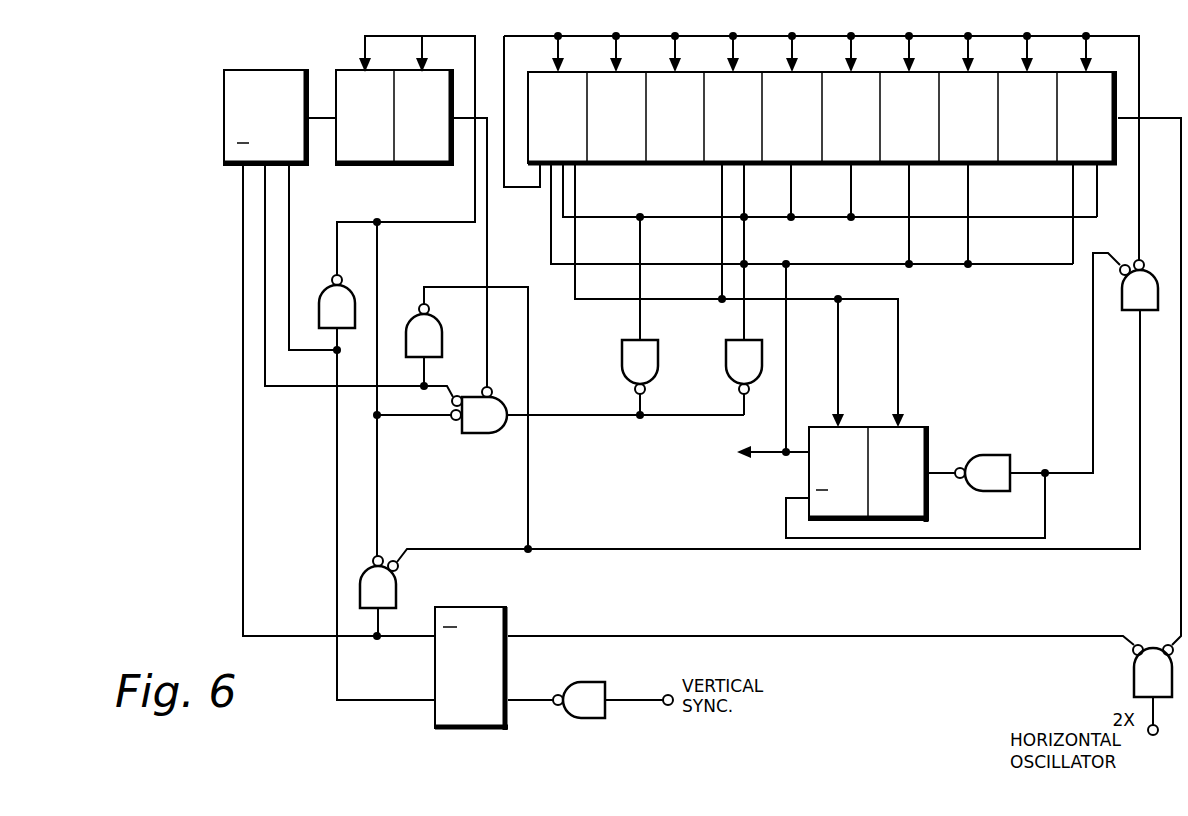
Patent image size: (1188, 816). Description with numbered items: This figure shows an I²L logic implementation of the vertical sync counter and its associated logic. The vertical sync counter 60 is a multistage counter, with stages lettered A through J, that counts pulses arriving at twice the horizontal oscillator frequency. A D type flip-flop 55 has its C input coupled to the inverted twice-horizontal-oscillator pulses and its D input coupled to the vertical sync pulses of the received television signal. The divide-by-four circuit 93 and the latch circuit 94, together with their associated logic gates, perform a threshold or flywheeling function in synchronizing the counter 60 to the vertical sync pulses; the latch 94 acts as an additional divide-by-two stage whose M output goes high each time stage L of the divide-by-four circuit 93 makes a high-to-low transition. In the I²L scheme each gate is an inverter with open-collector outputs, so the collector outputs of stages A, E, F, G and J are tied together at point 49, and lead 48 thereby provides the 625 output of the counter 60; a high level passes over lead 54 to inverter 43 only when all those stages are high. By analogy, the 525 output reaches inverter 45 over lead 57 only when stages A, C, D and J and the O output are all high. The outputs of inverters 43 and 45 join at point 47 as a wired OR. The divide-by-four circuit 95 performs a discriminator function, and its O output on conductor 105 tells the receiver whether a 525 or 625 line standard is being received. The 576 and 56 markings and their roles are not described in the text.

The latch circuit 94 is at (283, 70).
The divide-by-four circuit 93 is at (365, 166).
The vertical sync counter 60 is at (1040, 170).
The 625 output 625 is at (830, 191).
The 525 output 525 is at (812, 214).
The 576 count line 576 is at (736, 289).
The lead 48 is at (598, 217).
The point 49 is at (640, 217).
The line 56 is at (605, 264).
The lead 54 is at (640, 322).
The lead 57 is at (744, 322).
The inverter 43 is at (622, 357).
The inverter 45 is at (726, 357).
The point 47 is at (640, 415).
The conductor 105 is at (768, 453).
The divide-by-four circuit 95 is at (930, 440).
The D type flip-flop 55 is at (485, 607).